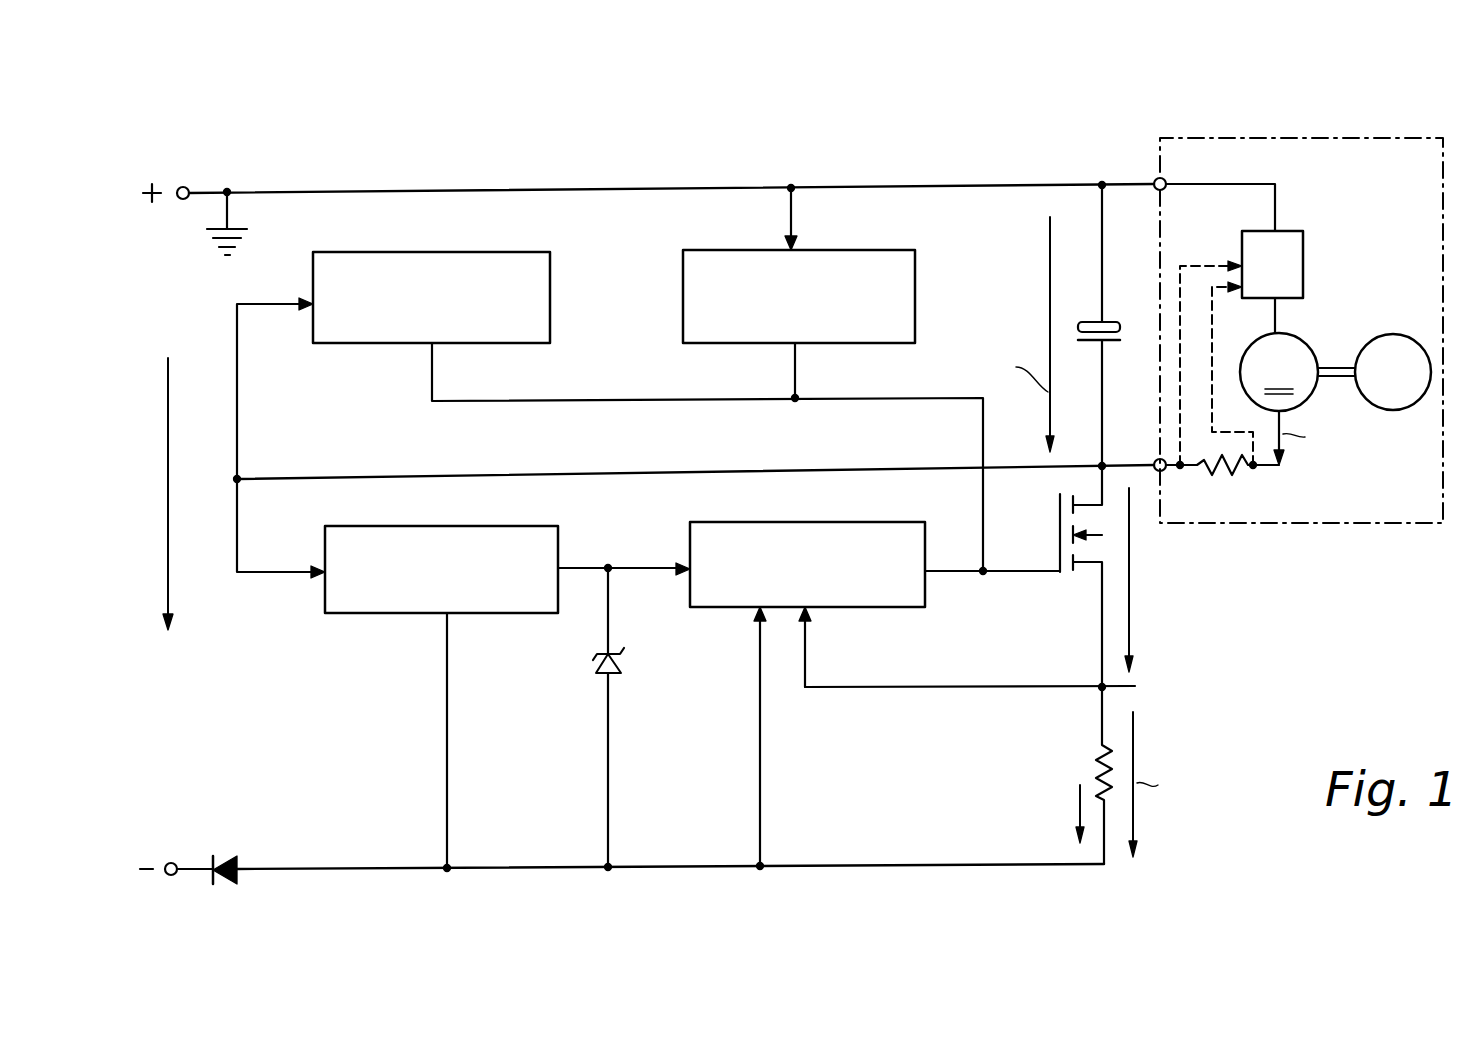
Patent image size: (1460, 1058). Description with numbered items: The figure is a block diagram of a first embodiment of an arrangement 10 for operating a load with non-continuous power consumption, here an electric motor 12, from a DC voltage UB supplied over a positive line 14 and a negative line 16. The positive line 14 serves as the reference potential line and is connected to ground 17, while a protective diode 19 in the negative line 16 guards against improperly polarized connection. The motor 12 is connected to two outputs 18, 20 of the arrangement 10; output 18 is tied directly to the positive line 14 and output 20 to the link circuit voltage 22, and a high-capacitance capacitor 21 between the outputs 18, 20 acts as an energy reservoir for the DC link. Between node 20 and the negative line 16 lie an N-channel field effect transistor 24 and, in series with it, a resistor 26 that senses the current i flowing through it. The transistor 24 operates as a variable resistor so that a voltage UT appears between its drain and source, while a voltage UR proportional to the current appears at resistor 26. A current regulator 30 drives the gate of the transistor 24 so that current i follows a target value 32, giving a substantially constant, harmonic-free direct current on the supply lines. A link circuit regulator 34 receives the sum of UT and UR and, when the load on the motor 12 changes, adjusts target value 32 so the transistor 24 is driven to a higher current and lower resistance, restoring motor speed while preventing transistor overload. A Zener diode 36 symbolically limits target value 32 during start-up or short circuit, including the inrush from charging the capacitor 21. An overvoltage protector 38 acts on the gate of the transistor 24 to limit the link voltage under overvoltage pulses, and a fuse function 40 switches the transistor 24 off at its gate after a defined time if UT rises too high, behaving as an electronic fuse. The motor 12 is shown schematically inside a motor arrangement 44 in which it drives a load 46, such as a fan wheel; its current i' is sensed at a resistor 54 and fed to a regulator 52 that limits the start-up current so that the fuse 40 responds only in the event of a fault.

The arrangement 10 is at (682, 143).
The electric motor 12 is at (1300, 341).
The positive line 14 is at (478, 191).
The negative line 16 is at (336, 868).
The ground 17 is at (240, 233).
The output 18 is at (1167, 181).
The protective diode 19 is at (228, 853).
The output 20 is at (1156, 460).
The high-capacitance capacitor 21 is at (1108, 322).
The link circuit voltage 22 is at (708, 472).
The N-channel field effect transistor 24 is at (1056, 535).
The resistor 26 is at (1099, 762).
The current regulator 30 is at (824, 585).
The target value 32 is at (640, 568).
The link circuit regulator 34 is at (457, 587).
The Zener diode 36 is at (622, 659).
The overvoltage protector 38 is at (813, 313).
The fuse function 40 is at (459, 313).
The motor arrangement 44 is at (1310, 137).
The load 46 is at (1405, 411).
The regulator 52 is at (1286, 282).
The resistor 54 is at (1218, 470).